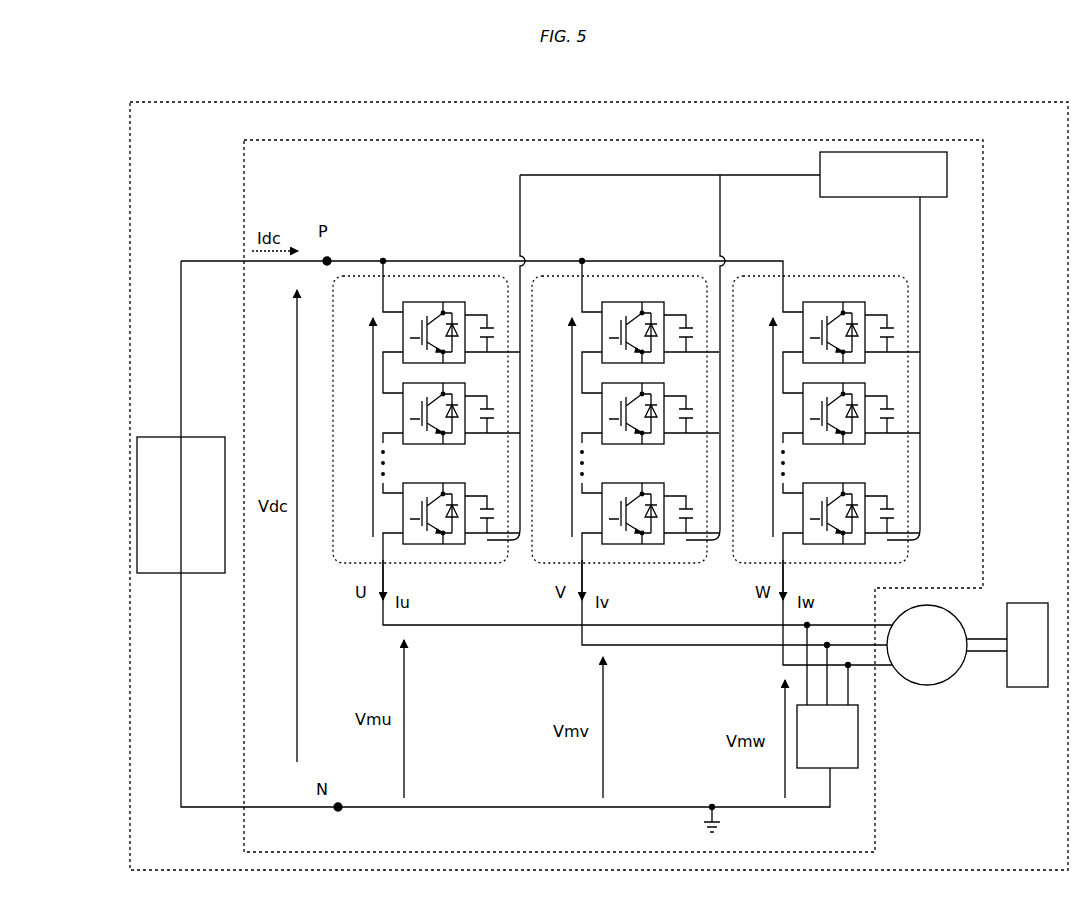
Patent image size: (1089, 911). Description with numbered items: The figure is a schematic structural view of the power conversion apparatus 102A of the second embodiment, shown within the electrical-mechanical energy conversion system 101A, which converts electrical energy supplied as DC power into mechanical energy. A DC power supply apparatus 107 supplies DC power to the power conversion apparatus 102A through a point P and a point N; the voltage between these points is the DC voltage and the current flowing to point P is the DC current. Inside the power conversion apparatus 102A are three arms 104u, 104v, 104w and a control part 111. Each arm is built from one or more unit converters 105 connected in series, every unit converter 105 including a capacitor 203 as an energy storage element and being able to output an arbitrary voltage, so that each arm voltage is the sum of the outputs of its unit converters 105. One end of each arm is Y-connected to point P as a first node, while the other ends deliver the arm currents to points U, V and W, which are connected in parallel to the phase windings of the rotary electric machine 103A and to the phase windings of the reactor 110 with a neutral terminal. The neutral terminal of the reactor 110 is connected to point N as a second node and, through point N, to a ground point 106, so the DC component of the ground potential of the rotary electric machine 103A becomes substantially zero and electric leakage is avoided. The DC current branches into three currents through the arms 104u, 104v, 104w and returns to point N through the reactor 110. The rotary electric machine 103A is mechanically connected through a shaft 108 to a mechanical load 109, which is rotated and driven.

The electrical-mechanical energy conversion system 101A is at (232, 93).
The power conversion apparatus 102A is at (468, 130).
The arm 104u is at (418, 276).
The arm 104v is at (617, 276).
The arm 104w is at (818, 276).
The unit converter 105 is at (441, 302).
The capacitor 203 is at (488, 320).
The ground point 106 is at (699, 818).
The DC power supply apparatus 107 is at (190, 436).
The shaft 108 is at (992, 655).
The mechanical load 109 is at (1015, 602).
The reactor with a neutral terminal 110 is at (858, 735).
The control part 111 is at (933, 198).
The rotary electric machine 103A is at (925, 687).